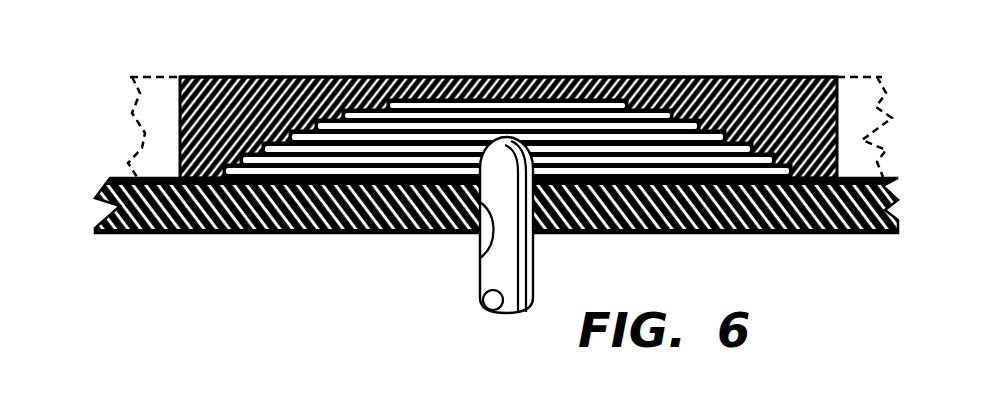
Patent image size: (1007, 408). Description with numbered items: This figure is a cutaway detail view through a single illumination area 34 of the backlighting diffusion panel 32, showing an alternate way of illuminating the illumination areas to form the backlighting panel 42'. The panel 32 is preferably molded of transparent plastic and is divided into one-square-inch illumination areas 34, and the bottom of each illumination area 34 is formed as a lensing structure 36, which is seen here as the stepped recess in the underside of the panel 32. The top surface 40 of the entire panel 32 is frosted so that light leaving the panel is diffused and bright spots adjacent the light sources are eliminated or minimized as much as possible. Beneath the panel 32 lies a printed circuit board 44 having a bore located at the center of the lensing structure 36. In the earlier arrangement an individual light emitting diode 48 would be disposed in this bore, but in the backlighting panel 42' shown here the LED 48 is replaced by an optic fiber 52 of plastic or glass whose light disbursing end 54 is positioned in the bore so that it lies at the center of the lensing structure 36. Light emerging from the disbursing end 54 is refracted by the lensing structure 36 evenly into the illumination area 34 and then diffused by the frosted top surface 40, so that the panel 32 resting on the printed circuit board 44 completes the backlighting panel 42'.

The backlighting diffusion panel 32 is at (786, 77).
The illumination area 34 is at (253, 62).
The lensing structure 36 is at (657, 160).
The top surface 40 is at (415, 77).
The backlighting panel 42' is at (919, 127).
The printed circuit board 44 is at (797, 233).
The light emitting diode 48 is at (481, 257).
The optic fiber 52 is at (503, 261).
The light disbursing end 54 is at (502, 143).